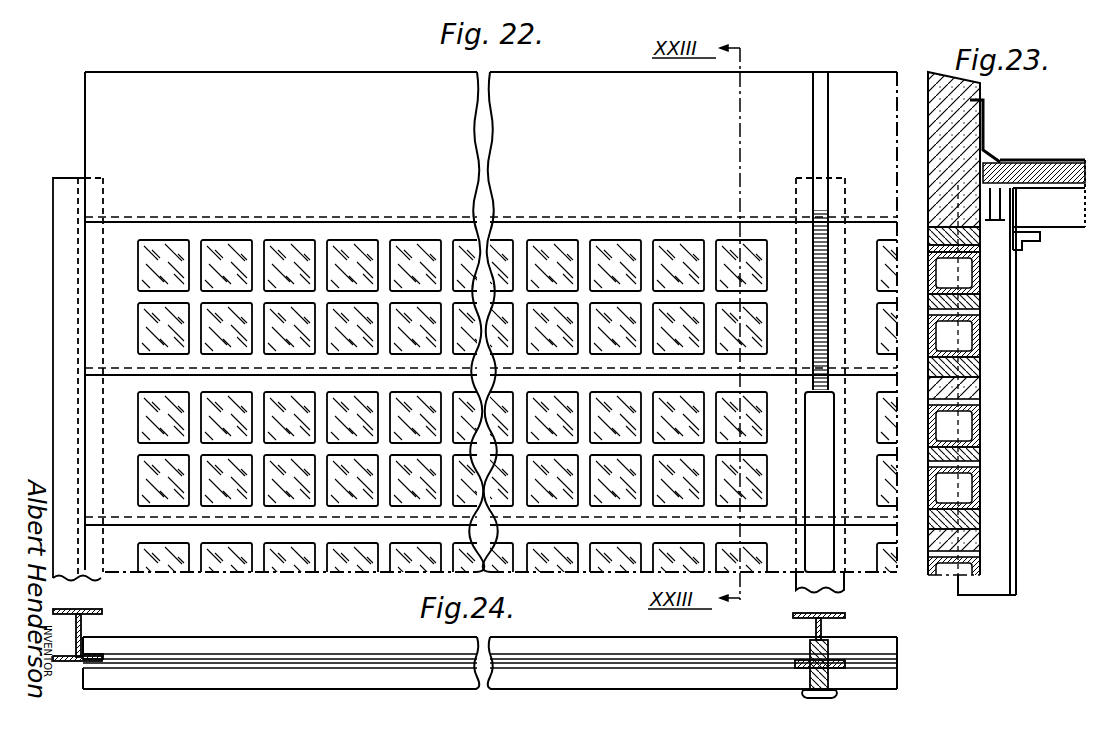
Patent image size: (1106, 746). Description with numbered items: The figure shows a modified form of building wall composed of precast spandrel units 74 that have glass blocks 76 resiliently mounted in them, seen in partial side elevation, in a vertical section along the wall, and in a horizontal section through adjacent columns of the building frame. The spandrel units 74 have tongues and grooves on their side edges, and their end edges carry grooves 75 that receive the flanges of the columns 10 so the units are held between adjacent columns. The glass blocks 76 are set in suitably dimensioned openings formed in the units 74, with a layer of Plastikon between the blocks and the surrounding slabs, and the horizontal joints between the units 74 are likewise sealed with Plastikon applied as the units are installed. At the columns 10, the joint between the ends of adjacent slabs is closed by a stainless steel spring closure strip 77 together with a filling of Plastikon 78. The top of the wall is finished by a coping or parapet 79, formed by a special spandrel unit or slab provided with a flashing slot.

In FIG. 22, the columns 10 is at (56, 387).
In FIG. 23, the columns 10 is at (1000, 360).
In FIG. 24, the columns 10 is at (85, 632).
In FIG. 22, the spandrel units 74 is at (115, 298).
In FIG. 23, the spandrel units 74 is at (980, 238).
In FIG. 24, the spandrel units 74 is at (355, 686).
In FIG. 24, the grooves 75 is at (85, 663).
In FIG. 22, the glass blocks 76 is at (240, 562).
In FIG. 23, the glass blocks 76 is at (980, 430).
In FIG. 22, the spring closure strip 77 is at (822, 544).
In FIG. 24, the spring closure strip 77 is at (830, 695).
In FIG. 22, the filling of Plastikon 78 is at (813, 305).
In FIG. 24, the filling of Plastikon 78 is at (818, 694).
In FIG. 22, the coping or parapet 79 is at (574, 147).
In FIG. 23, the coping or parapet 79 is at (968, 122).